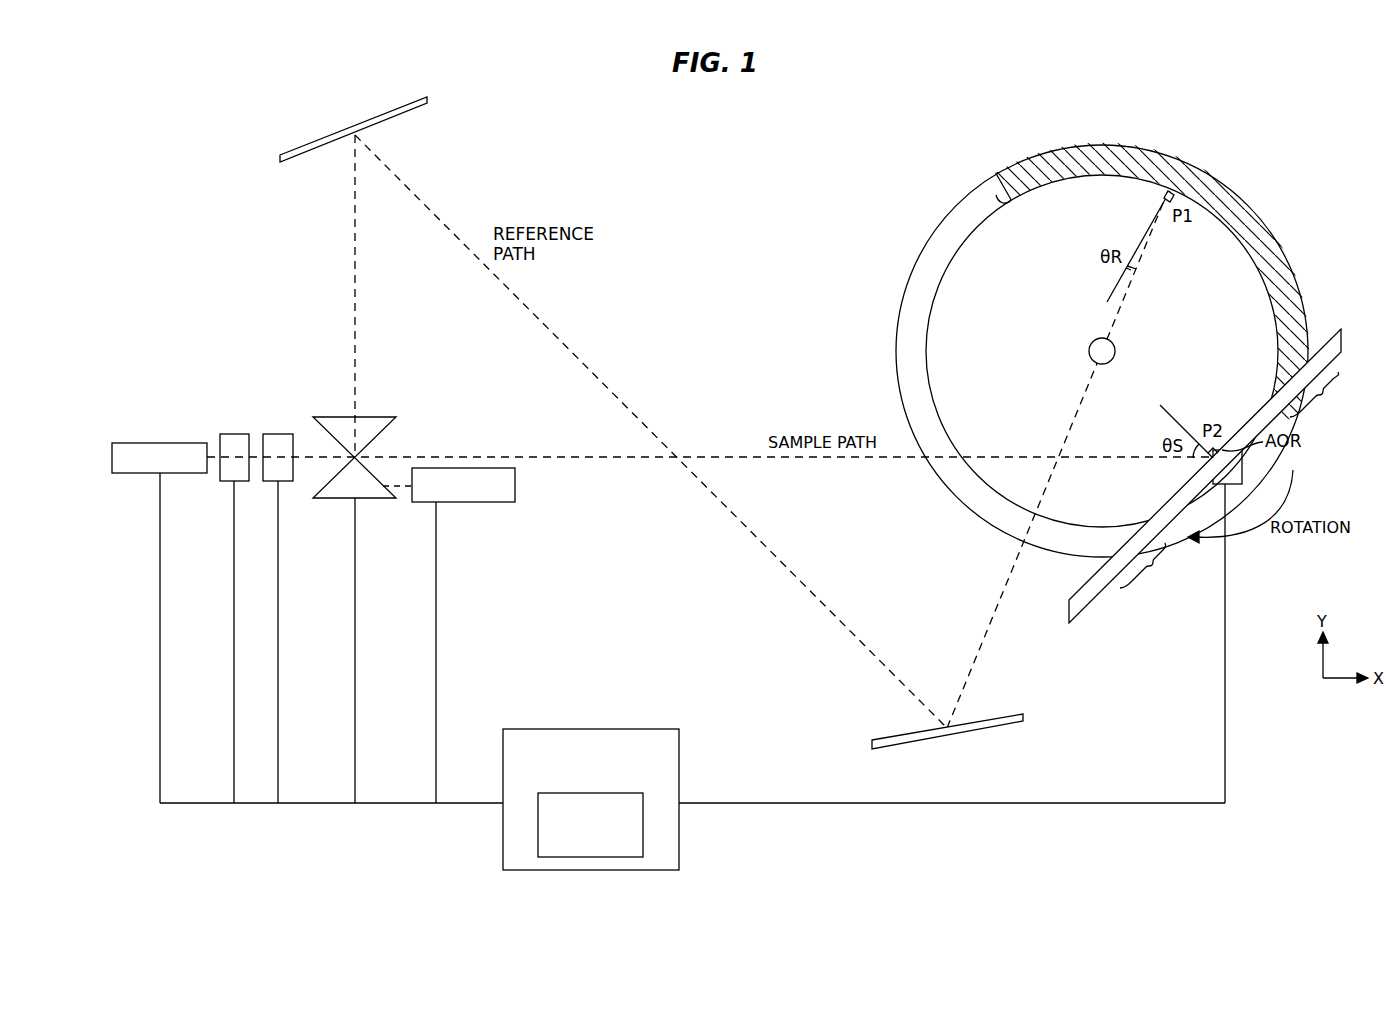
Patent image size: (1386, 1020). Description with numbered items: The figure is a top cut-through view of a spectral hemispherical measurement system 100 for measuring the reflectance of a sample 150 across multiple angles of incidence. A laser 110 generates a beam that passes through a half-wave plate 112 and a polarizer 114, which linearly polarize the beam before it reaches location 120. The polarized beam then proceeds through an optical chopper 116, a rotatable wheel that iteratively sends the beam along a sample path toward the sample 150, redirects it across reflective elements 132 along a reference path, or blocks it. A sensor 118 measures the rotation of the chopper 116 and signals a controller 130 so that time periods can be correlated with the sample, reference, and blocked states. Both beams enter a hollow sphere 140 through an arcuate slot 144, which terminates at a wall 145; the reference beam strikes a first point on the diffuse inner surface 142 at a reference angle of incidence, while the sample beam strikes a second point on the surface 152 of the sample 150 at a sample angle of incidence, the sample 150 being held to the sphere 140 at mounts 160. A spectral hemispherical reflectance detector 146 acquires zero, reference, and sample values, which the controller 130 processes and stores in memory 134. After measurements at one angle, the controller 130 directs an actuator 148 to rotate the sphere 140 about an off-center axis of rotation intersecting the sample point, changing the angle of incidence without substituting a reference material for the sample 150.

The spectral hemispherical measurement system 100 is at (780, 205).
The laser 110 is at (152, 443).
The half-wave plate 112 is at (226, 484).
The polarizer 114 is at (286, 483).
The optical chopper 116 is at (385, 417).
The sensor 118 is at (500, 502).
The location 120 is at (318, 456).
The controller 130 is at (591, 799).
The reflective elements 132 is at (300, 148).
The memory 134 is at (590, 825).
The hollow sphere 140 is at (1272, 232).
The inner surface 142 is at (1226, 239).
The arcuate slot 144 is at (908, 303).
The wall 145 is at (1000, 185).
The spectral hemispherical reflectance detector 146 is at (1089, 351).
The actuator 148 is at (1243, 466).
The sample 150 is at (1342, 335).
The surface 152 is at (1243, 414).
The mounts 160 is at (1239, 483).